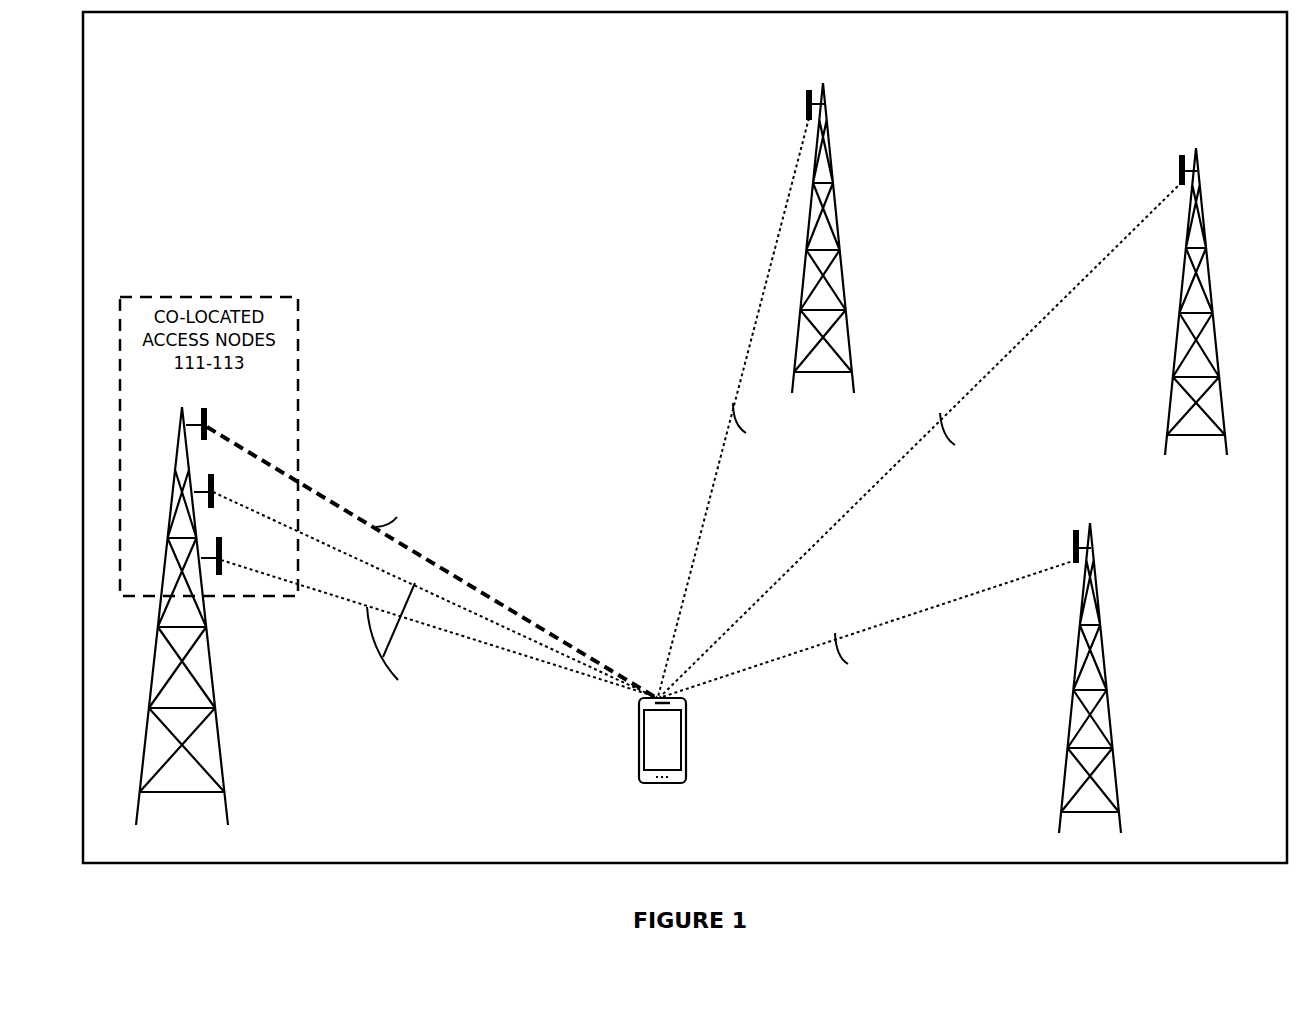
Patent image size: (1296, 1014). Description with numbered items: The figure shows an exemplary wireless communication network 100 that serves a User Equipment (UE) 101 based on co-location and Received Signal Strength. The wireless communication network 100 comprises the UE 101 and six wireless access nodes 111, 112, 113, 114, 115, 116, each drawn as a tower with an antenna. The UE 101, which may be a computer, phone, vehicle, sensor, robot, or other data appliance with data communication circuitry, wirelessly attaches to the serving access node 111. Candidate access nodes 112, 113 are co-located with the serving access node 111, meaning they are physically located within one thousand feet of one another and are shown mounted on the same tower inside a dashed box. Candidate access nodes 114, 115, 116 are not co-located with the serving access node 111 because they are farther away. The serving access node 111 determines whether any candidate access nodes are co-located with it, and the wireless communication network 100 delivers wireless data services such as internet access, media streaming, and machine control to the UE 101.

The wireless communication network 100 is at (474, 41).
The User Equipment (UE) 101 is at (662, 740).
The serving access node 111 is at (205, 408).
The candidate access node 112 is at (211, 475).
The candidate access node 113 is at (219, 538).
The candidate access node 114 is at (823, 83).
The candidate access node 115 is at (1196, 148).
The candidate access node 116 is at (1090, 523).